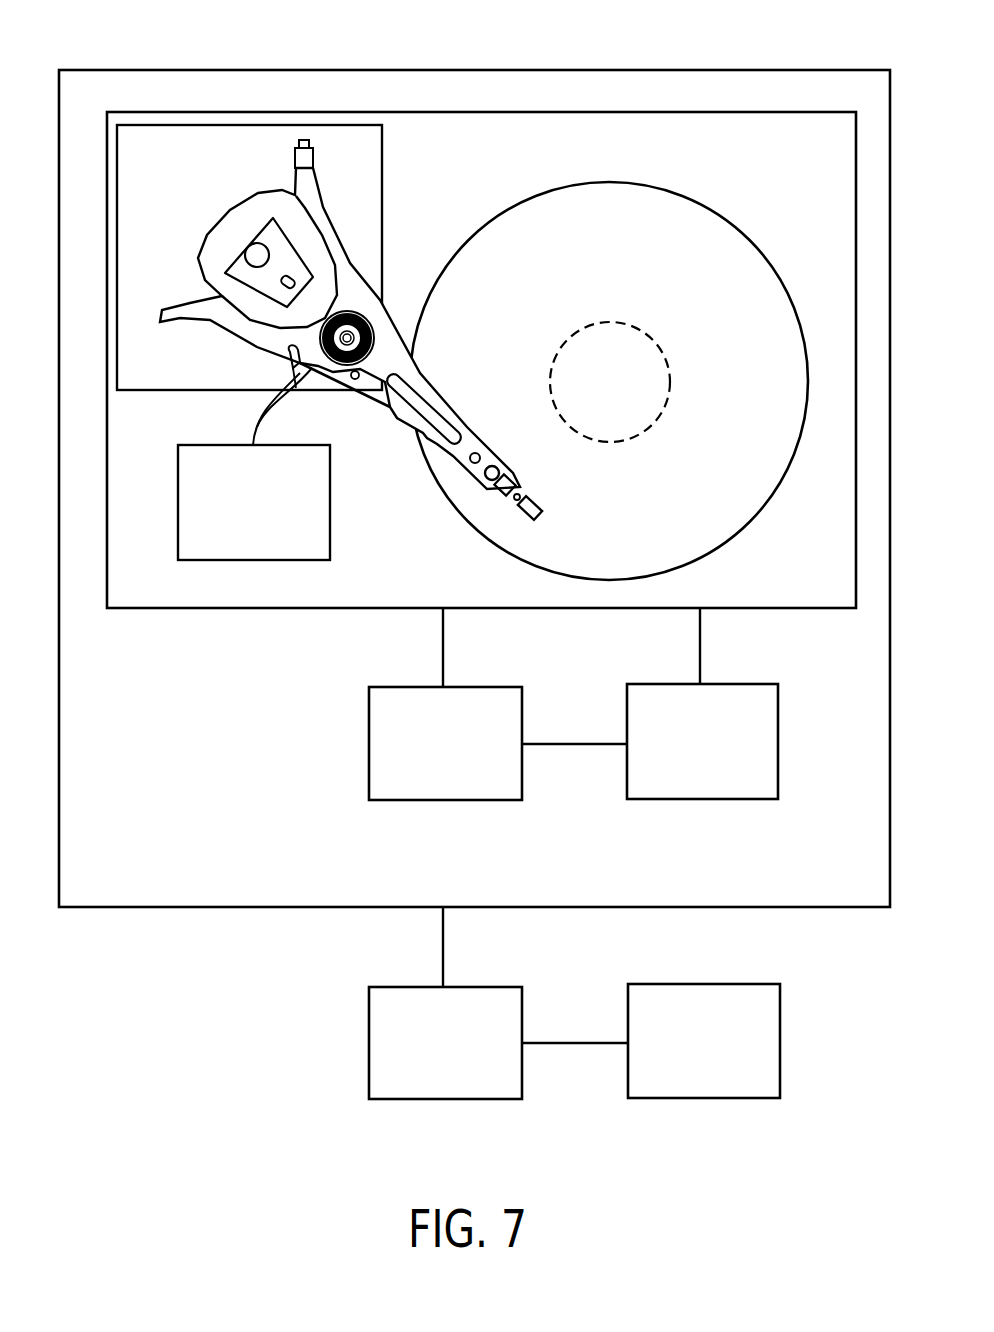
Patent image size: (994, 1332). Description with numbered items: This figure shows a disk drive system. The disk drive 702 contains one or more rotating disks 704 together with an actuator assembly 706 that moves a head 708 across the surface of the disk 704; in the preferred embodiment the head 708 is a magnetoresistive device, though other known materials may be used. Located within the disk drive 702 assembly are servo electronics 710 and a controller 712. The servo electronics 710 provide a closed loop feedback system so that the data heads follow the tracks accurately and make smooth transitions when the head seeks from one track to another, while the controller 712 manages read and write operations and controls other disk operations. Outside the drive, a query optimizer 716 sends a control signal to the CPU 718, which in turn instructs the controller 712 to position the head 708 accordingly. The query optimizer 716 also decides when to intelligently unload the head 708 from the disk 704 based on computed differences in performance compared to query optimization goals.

The disk drive 702 is at (506, 70).
The rotating disk 704 is at (623, 283).
The actuator assembly 706 is at (398, 418).
The head 708 is at (520, 517).
The servo electronics 710 is at (455, 800).
The controller 712 is at (712, 800).
The query optimizer 716 is at (712, 1098).
The CPU 718 is at (455, 1099).